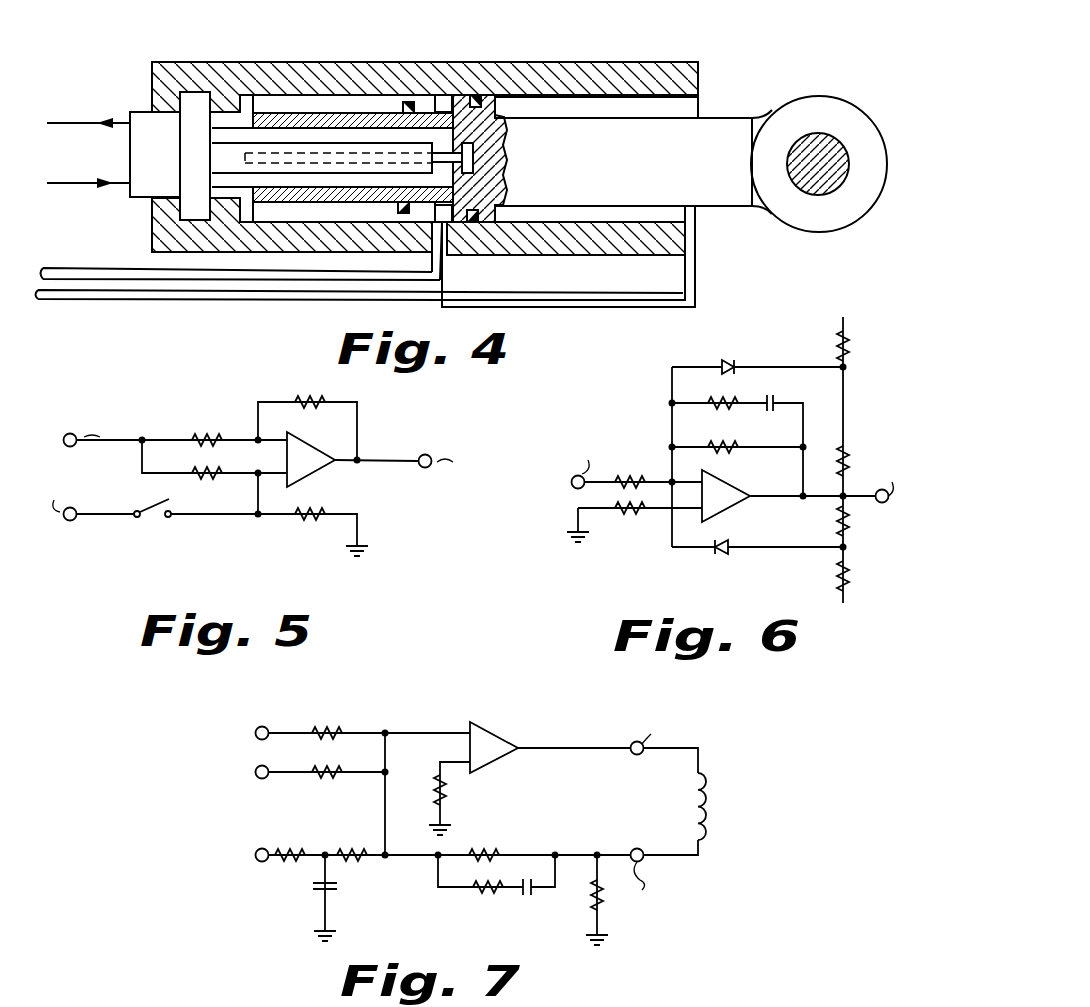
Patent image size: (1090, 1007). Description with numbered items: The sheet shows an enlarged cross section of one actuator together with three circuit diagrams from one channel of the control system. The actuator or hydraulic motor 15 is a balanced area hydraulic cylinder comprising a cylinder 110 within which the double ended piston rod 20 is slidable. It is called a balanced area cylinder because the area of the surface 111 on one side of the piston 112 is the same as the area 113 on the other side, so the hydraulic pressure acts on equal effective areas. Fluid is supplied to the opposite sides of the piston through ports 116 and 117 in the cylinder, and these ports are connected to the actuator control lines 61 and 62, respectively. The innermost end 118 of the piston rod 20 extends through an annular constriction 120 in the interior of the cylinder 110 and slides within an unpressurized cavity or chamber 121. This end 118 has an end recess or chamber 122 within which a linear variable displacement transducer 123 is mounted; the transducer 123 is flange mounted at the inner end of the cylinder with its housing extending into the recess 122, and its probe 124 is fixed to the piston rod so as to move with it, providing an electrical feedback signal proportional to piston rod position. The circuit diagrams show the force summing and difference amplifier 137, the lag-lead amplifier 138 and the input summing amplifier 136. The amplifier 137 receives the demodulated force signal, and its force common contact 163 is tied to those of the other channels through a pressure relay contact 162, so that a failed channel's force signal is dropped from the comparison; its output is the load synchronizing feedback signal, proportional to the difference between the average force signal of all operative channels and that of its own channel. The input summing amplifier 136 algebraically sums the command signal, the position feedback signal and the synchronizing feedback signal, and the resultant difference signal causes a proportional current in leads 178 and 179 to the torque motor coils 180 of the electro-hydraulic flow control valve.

In FIG. 4, the actuator or hydraulic motor 15 is at (838, 55).
In FIG. 4, the double ended piston rod 20 is at (633, 162).
In FIG. 4, the actuator control line 61 is at (178, 306).
In FIG. 4, the actuator control line 62 is at (117, 267).
In FIG. 4, the cylinder 110 is at (323, 72).
In FIG. 4, the surface 111 is at (446, 93).
In FIG. 4, the piston 112 is at (480, 93).
In FIG. 4, the area 113 is at (498, 102).
In FIG. 4, the port 116 is at (697, 245).
In FIG. 4, the port 117 is at (440, 232).
In FIG. 4, the innermost end of the piston rod 118 is at (248, 108).
In FIG. 4, the annular constriction 120 is at (392, 108).
In FIG. 4, the unpressurized cavity or chamber 121 is at (283, 210).
In FIG. 4, the end recess or chamber 122 is at (423, 180).
In FIG. 4, the linear variable displacement transducer 123 is at (160, 149).
In FIG. 4, the probe 124 is at (475, 155).
In FIG. 7, the input summing amplifier 136 is at (500, 920).
In FIG. 5, the force summing and difference amplifier 137 is at (318, 568).
In FIG. 6, the lag-lead amplifier 138 is at (773, 575).
In FIG. 5, the pressure relay contact 162 is at (158, 501).
In FIG. 5, the force common contact 163 is at (76, 508).
In FIG. 7, the lead 178 is at (683, 862).
In FIG. 7, the lead 179 is at (686, 752).
In FIG. 7, the torque motor coils 180 is at (712, 815).